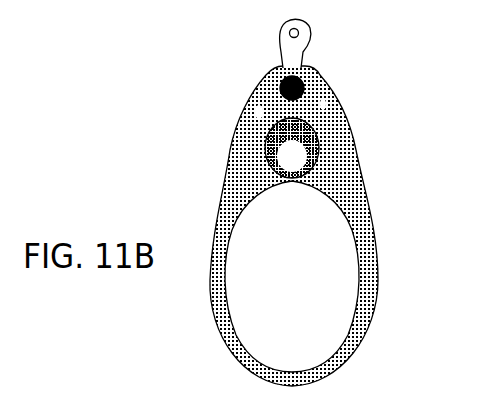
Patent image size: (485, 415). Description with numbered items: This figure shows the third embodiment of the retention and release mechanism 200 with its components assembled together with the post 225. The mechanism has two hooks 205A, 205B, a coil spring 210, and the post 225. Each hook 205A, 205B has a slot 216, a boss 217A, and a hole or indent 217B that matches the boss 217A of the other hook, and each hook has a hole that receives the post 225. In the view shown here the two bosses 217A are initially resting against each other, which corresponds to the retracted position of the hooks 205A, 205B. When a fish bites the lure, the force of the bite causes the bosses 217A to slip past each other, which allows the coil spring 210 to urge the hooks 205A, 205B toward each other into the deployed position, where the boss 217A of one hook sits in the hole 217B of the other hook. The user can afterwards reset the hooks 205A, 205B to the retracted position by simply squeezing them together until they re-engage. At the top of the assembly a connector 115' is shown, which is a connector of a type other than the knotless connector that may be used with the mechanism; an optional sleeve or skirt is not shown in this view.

The retention and release mechanism 200 is at (350, 371).
The hook 205A is at (218, 206).
The hook 205B is at (368, 217).
The slot 216 is at (260, 102).
The boss 217A is at (294, 137).
The hole (or indent) 217B is at (247, 113).
The coil spring 210 is at (320, 143).
The post 225 is at (301, 78).
The connector 115' is at (262, 43).